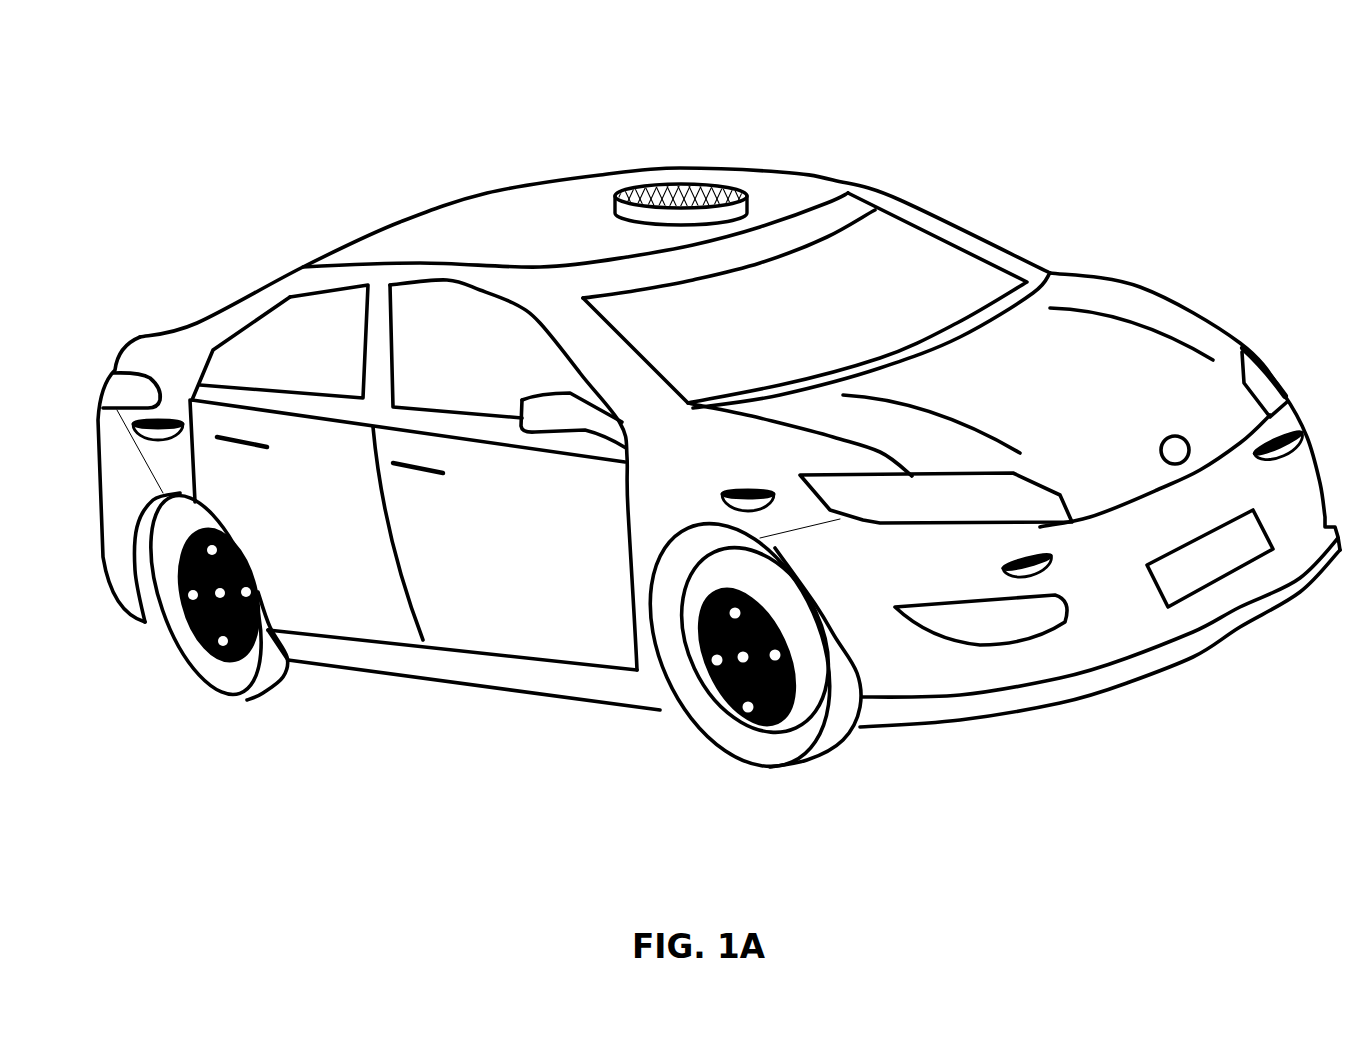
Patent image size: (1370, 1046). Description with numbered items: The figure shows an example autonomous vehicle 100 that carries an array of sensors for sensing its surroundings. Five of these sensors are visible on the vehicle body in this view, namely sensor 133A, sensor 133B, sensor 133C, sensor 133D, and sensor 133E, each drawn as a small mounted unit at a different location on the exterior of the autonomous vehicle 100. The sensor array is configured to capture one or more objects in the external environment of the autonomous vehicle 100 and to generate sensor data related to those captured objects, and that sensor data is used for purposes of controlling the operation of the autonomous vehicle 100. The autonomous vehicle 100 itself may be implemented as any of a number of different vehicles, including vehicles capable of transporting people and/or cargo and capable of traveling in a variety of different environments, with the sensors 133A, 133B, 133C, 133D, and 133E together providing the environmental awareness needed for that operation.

The autonomous vehicle 100 is at (1108, 104).
The sensor 133A is at (696, 182).
The sensor 133B is at (180, 420).
The sensor 133C is at (743, 493).
The sensor 133D is at (1008, 566).
The sensor 133E is at (1257, 455).